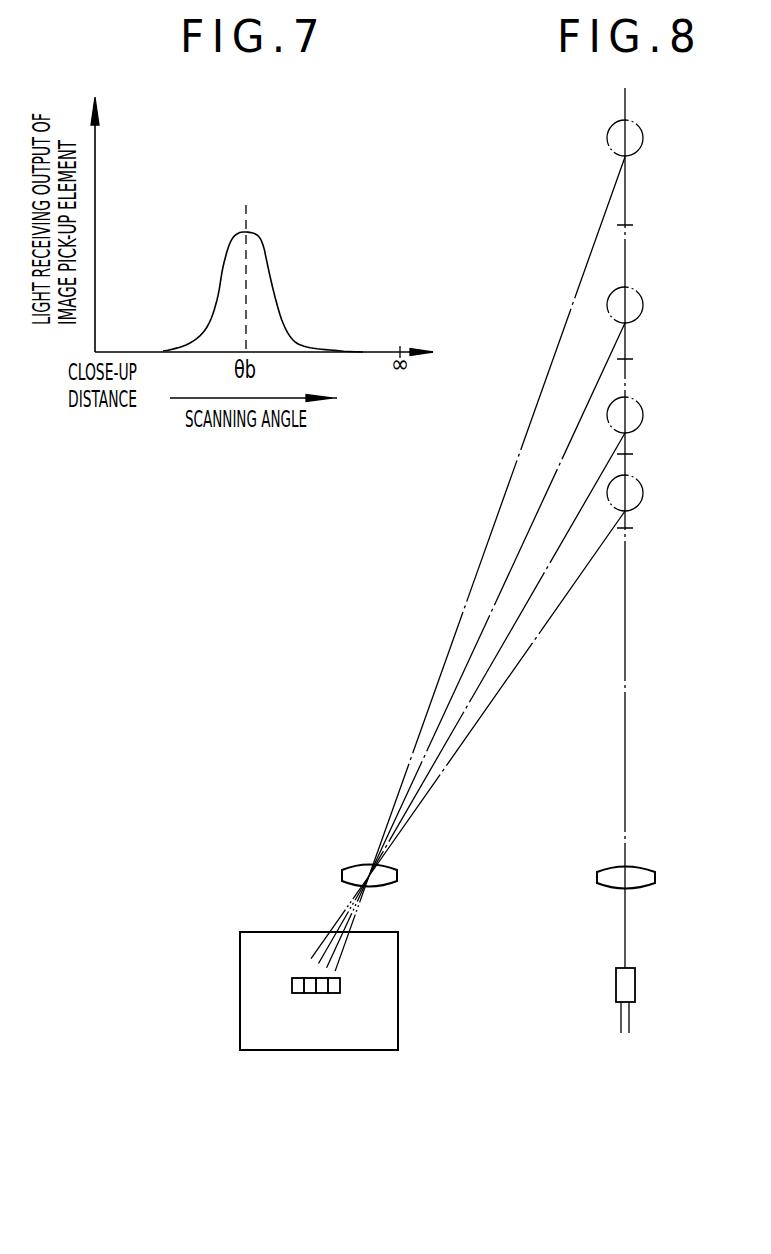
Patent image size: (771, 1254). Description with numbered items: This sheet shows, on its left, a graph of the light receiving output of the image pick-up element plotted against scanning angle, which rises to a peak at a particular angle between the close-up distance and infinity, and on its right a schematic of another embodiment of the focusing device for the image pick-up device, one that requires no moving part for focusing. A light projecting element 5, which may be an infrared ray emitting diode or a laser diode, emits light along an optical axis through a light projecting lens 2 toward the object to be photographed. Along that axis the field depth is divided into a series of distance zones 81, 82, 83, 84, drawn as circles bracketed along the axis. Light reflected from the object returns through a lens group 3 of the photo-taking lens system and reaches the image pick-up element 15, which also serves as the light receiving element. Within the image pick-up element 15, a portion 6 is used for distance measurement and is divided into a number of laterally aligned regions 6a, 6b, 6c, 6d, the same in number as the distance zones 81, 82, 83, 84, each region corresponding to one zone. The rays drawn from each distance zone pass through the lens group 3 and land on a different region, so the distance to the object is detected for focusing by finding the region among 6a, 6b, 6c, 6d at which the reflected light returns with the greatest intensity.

The light projecting lens 2 is at (635, 875).
The lens group 3 is at (385, 875).
The light projecting element 5 is at (622, 983).
The portion used for distance measurement 6 is at (388, 963).
The region 6a is at (297, 985).
The region 6b is at (309, 993).
The region 6c is at (321, 993).
The region 6d is at (335, 985).
The image pick-up element 15 is at (398, 993).
The distance zone 81 is at (657, 453).
The distance zone 82 is at (657, 361).
The distance zone 83 is at (657, 235).
The distance zone 84 is at (657, 121).